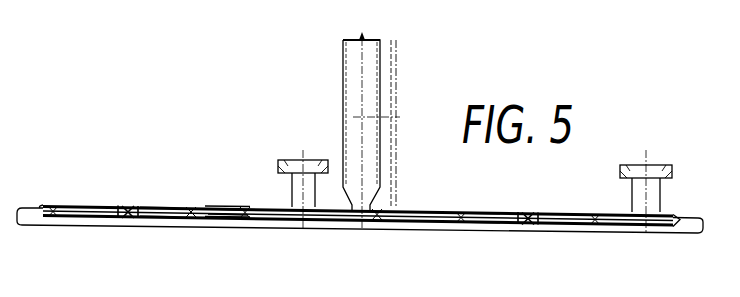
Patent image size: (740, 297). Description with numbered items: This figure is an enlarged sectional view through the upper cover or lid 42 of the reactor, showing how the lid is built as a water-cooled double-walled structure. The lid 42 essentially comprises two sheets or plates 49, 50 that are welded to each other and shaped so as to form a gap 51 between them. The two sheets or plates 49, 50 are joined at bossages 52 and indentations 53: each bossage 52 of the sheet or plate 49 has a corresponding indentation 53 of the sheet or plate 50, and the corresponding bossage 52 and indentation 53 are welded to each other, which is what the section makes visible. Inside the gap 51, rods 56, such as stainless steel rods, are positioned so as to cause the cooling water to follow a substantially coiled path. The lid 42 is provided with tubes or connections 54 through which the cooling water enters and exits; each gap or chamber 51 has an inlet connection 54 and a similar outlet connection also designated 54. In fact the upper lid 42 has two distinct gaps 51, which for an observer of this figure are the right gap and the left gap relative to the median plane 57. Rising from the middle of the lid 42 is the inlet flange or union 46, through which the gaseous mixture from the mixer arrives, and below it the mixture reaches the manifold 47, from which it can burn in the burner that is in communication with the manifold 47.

The upper lid 42 is at (189, 203).
The inlet flange or union 46 is at (397, 140).
The manifold 47 is at (351, 129).
The sheet or plate 49 is at (217, 210).
The sheet or plate 50 is at (212, 219).
The gap 51 is at (88, 213).
The bossage 52 is at (125, 211).
The indentation 53 is at (128, 219).
The tube or connection 54 is at (284, 175).
The rod 56 is at (145, 218).
The median plane 57 is at (379, 46).